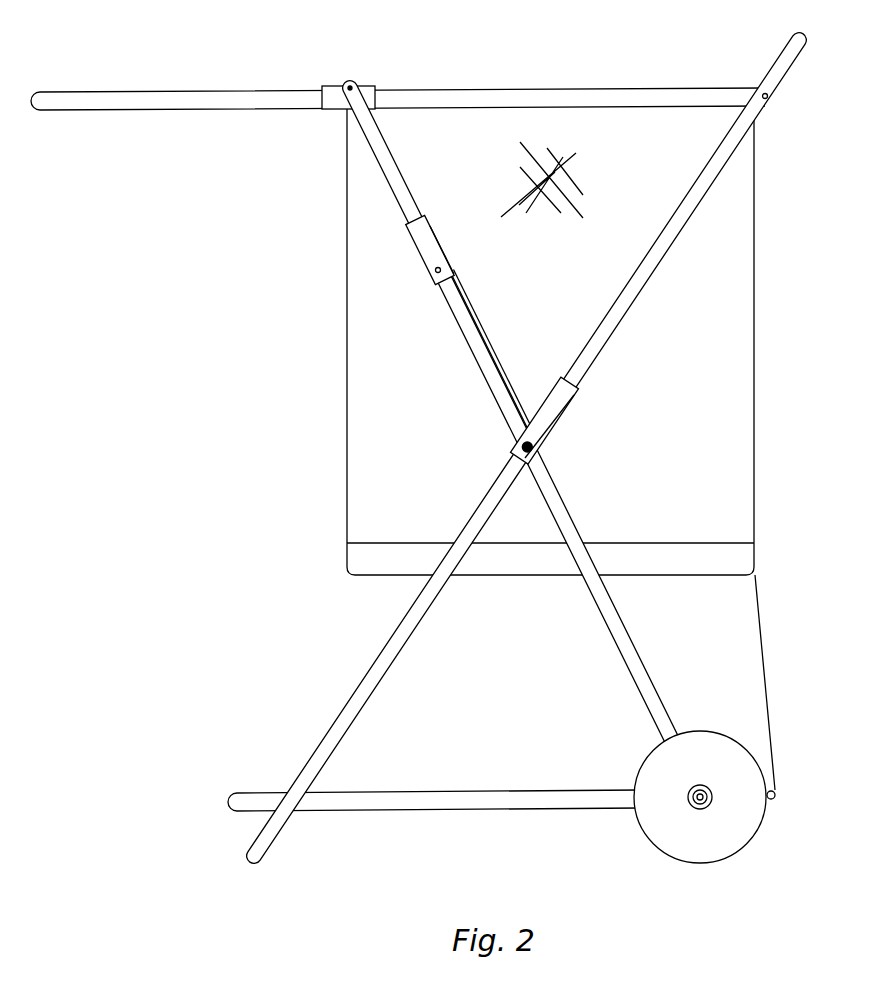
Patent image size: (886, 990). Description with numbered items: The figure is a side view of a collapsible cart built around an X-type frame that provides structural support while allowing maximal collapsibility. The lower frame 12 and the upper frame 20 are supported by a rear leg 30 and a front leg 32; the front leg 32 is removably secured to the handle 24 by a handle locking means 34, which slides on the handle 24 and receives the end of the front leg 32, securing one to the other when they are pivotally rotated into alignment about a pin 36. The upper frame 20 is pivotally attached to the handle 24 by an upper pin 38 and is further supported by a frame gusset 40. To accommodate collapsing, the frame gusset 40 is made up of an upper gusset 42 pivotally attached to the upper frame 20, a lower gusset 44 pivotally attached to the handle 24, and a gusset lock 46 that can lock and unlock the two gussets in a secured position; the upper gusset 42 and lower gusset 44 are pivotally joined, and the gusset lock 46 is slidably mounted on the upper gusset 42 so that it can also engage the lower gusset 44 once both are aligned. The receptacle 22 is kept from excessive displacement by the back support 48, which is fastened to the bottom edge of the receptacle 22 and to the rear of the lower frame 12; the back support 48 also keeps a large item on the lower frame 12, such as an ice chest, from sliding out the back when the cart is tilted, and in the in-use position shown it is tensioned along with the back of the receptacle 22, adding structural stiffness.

The lower frame 12 is at (548, 790).
The upper frame 20 is at (465, 82).
The receptacle 22 is at (754, 378).
The handle 24 is at (683, 243).
The rear leg 30 is at (608, 635).
The front leg 32 is at (387, 677).
The handle locking means 34 is at (567, 413).
The pin 36 is at (523, 449).
The upper pin 38 is at (767, 98).
The frame gusset 40 is at (419, 325).
The upper gusset 42 is at (388, 143).
The lower gusset 44 is at (478, 323).
The gusset lock 46 is at (443, 236).
The back support 48 is at (767, 667).